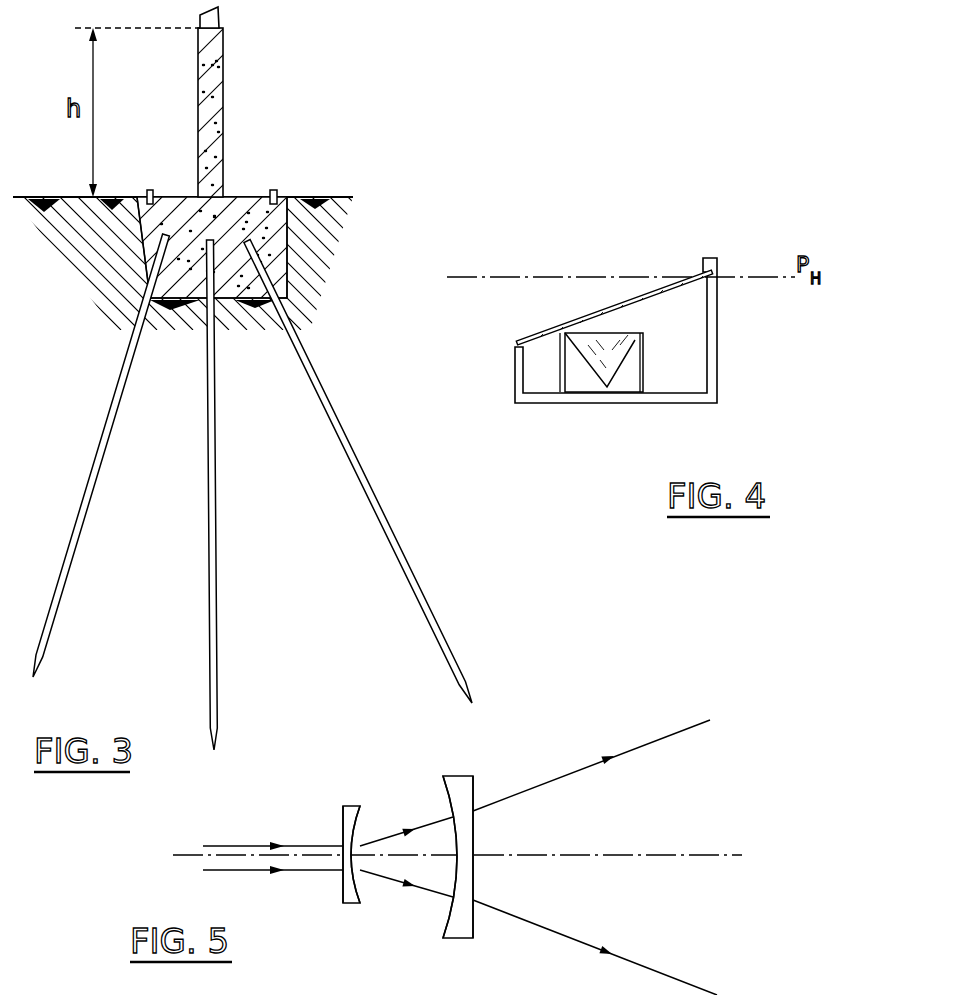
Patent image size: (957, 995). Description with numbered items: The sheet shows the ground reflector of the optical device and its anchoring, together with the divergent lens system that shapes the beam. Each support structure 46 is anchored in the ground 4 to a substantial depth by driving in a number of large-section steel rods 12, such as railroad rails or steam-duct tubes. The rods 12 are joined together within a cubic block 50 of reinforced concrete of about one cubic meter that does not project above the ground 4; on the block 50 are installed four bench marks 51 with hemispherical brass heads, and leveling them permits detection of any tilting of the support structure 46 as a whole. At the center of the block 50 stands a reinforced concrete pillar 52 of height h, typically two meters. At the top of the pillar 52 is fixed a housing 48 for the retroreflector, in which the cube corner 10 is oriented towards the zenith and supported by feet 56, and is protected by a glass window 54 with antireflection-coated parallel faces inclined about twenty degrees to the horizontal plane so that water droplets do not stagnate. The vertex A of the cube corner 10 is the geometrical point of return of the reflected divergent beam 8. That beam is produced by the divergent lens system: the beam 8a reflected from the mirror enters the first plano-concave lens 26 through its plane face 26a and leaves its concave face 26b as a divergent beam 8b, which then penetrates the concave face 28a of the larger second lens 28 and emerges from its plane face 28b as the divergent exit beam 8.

In FIG. 3, the ground 4 is at (62, 218).
In FIG. 5, the divergent exit beam 8 is at (587, 793).
In FIG. 5, the beam reflected from the mirror 8a is at (245, 846).
In FIG. 5, the divergent beam 8b is at (428, 837).
In FIG. 4, the cube corner 10 is at (592, 370).
In FIG. 3, the steel rods 12 is at (208, 596).
In FIG. 5, the plano-concave lens 26 is at (343, 817).
In FIG. 5, the plane face 26a is at (343, 888).
In FIG. 5, the concave face 26b is at (360, 897).
In FIG. 5, the second plano-concave lens 28 is at (468, 792).
In FIG. 5, the concave face 28a is at (443, 917).
In FIG. 5, the plane face 28b is at (473, 922).
In FIG. 3, the support structure 46 is at (250, 136).
In FIG. 3, the housing 48 is at (220, 13).
In FIG. 4, the housing 48 is at (710, 350).
In FIG. 3, the cubic block 50 is at (268, 223).
In FIG. 3, the bench marks 51 is at (150, 190).
In FIG. 3, the pillar 52 is at (223, 65).
In FIG. 4, the glass window 54 is at (552, 331).
In FIG. 4, the feet 56 is at (558, 372).
In FIG. 4, the vertex A is at (607, 385).